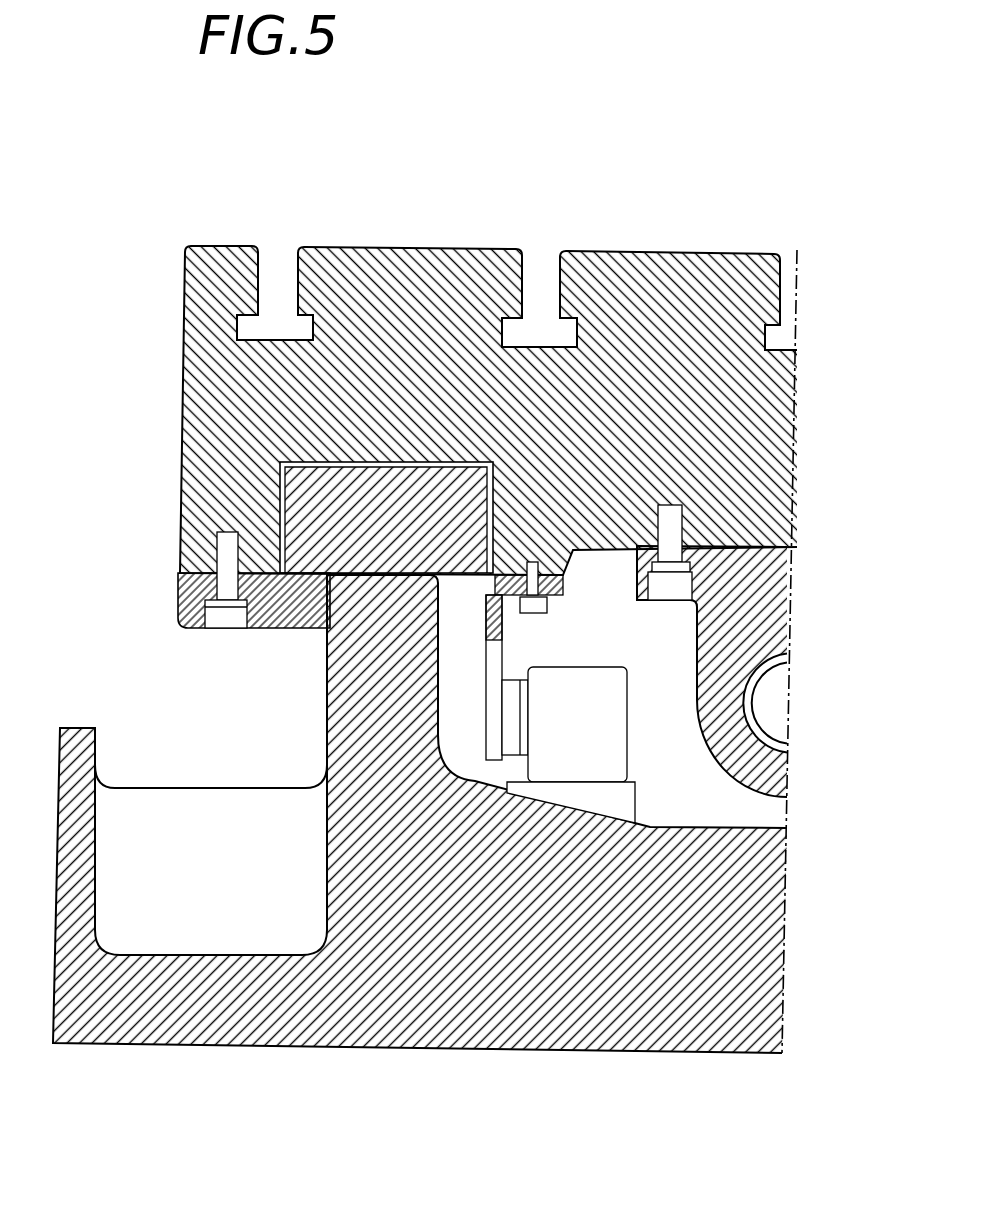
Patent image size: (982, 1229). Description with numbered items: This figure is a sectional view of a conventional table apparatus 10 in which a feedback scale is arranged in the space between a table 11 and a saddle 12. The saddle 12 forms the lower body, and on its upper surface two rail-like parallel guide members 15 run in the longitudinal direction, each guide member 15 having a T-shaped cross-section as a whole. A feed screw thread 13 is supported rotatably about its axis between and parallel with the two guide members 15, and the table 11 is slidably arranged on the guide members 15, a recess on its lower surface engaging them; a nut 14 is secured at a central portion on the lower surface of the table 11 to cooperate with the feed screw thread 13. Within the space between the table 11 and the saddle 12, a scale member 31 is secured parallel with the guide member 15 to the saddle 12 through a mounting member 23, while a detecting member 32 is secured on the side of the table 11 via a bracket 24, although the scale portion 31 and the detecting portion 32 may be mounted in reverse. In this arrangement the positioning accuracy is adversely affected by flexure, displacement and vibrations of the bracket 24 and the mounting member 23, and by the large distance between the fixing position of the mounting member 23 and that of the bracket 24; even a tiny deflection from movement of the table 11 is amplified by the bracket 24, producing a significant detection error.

The table apparatus 10 is at (453, 629).
The table 11 is at (366, 290).
The saddle 12 is at (672, 925).
The feed screw thread 13 is at (763, 713).
The nut 14 is at (760, 604).
The guide member 15 is at (300, 492).
The mounting member 23 is at (608, 798).
The bracket 24 is at (487, 660).
The scale member 31 is at (593, 692).
The detecting member 32 is at (508, 715).